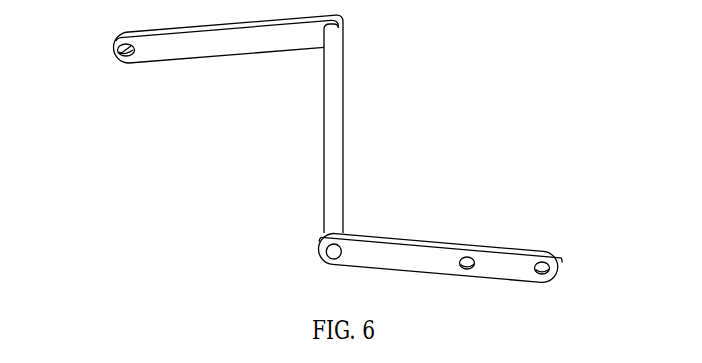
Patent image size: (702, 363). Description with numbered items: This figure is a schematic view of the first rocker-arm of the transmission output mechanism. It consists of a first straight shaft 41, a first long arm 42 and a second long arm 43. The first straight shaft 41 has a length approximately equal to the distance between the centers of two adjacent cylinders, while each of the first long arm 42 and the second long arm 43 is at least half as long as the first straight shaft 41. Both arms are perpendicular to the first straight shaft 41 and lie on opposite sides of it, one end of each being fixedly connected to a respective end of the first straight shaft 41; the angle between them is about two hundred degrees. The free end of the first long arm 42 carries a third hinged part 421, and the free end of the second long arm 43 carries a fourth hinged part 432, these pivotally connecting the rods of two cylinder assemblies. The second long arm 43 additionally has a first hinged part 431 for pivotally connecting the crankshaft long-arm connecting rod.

The first straight shaft 41 is at (335, 88).
The first long arm 42 is at (182, 84).
The third hinged part 421 is at (114, 58).
The second long arm 43 is at (489, 190).
The first hinged part 431 is at (470, 258).
The fourth hinged part 432 is at (545, 260).